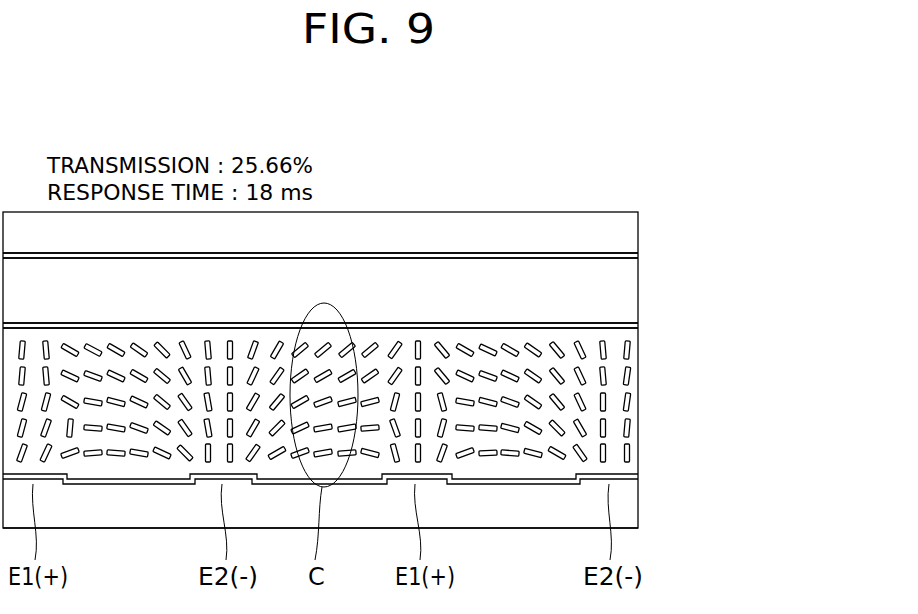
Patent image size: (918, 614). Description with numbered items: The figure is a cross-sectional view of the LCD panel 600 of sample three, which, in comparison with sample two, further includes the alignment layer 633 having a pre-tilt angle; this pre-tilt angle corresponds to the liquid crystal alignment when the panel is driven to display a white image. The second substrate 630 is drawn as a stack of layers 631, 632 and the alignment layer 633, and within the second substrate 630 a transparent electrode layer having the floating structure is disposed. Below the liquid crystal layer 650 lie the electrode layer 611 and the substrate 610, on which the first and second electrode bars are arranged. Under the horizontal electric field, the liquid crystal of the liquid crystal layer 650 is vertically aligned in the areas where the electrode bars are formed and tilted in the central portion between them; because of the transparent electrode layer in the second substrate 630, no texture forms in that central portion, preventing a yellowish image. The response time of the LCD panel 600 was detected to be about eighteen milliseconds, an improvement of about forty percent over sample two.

The LCD panel 600 is at (337, 110).
The first substrate 610 is at (630, 508).
The electrode layer 611 is at (638, 478).
The second substrate 630 is at (718, 245).
The first layer of second substrate 631 is at (638, 256).
The second substrate 632 is at (630, 292).
The alignment layer 633 is at (638, 326).
The liquid crystal layer 650 is at (665, 335).